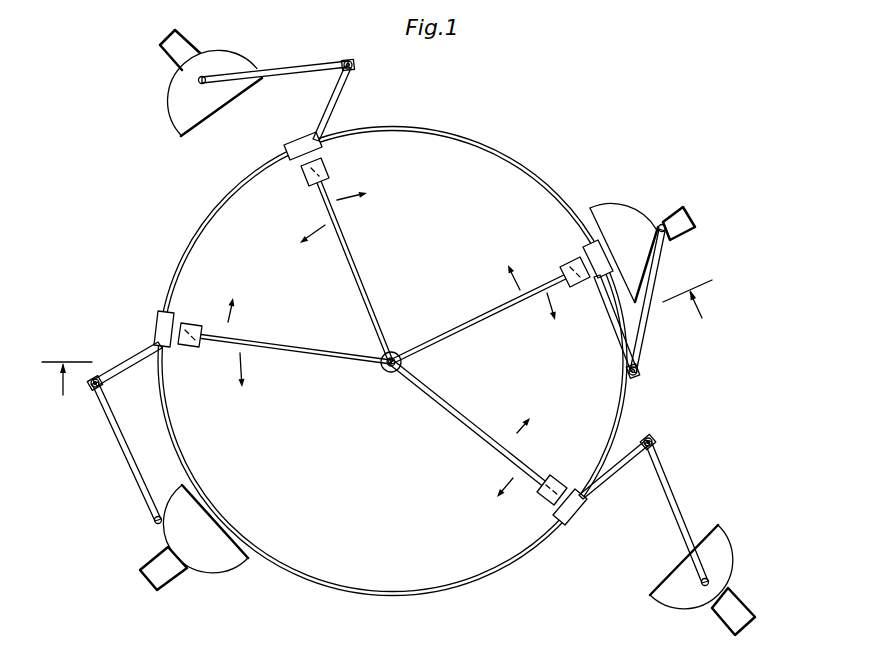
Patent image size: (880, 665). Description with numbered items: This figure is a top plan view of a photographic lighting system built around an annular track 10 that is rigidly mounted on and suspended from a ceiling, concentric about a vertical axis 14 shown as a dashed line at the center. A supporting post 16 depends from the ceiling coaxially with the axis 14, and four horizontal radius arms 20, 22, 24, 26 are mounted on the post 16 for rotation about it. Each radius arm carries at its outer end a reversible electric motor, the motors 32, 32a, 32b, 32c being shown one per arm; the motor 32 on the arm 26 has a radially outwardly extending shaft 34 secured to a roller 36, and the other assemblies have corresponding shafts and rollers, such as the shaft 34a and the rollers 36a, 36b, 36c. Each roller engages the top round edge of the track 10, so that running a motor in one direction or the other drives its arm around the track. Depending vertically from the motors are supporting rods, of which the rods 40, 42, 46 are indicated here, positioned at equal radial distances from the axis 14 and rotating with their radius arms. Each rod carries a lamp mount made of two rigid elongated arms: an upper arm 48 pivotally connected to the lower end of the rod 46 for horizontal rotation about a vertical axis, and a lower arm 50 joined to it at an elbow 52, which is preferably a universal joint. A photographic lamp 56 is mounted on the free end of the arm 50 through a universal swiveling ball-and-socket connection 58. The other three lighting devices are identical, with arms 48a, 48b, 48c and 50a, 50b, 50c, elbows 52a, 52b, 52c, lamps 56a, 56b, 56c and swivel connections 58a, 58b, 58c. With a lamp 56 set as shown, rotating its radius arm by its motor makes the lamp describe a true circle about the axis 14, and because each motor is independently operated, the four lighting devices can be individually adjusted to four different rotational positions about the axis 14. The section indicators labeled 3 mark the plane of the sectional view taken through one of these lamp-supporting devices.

The annular track 10 is at (502, 152).
The vertical axis 14 is at (396, 352).
The supporting post 16 is at (390, 372).
The radius arm 20 is at (466, 410).
The radius arm 22 is at (462, 323).
The radius arm 24 is at (360, 267).
The radius arm 26 is at (288, 345).
The reversible electric motor 32 is at (204, 320).
The reversible electric motor 32a is at (552, 478).
The reversible electric motor 32b is at (564, 253).
The reversible electric motor 32c is at (330, 168).
The shaft 34 is at (188, 288).
The shaft 34a is at (545, 507).
The roller 36 is at (153, 330).
The roller 36a is at (585, 515).
The roller 36b is at (590, 240).
The roller 36c is at (303, 136).
The supporting rod 40 is at (543, 497).
The supporting rod 42 is at (562, 263).
The supporting rod 46 is at (192, 352).
The arm 48 is at (138, 367).
The arm 48a is at (576, 472).
The arm 48b is at (597, 316).
The arm 48c is at (345, 104).
The arm 50 is at (126, 472).
The arm 50a is at (683, 498).
The arm 50b is at (662, 273).
The arm 50c is at (287, 64).
The elbow 52 is at (93, 392).
The elbow 52a is at (655, 440).
The elbow 52b is at (641, 370).
The elbow 52c is at (355, 67).
The photographic lamp 56 is at (212, 576).
The photographic lamp 56a is at (735, 553).
The photographic lamp 56b is at (622, 205).
The photographic lamp 56c is at (243, 58).
The universal swiveling connection 58 is at (150, 522).
The universal swiveling connection 58a is at (712, 582).
The universal swiveling connection 58b is at (665, 218).
The universal swiveling connection 58c is at (202, 80).
The section line 3- 3 is at (377, 347).